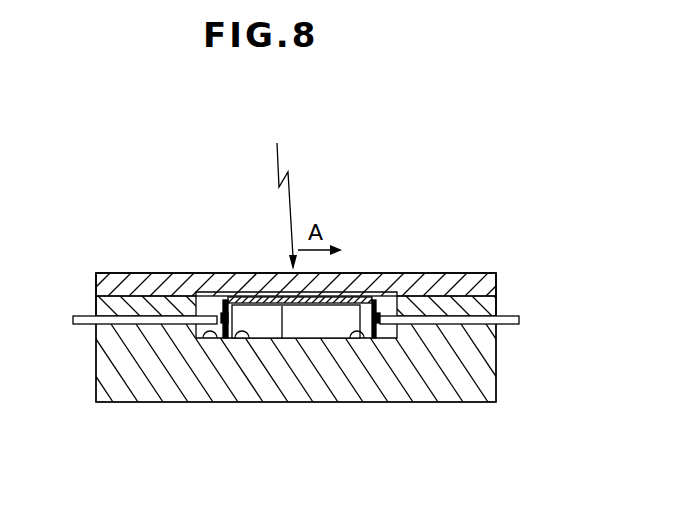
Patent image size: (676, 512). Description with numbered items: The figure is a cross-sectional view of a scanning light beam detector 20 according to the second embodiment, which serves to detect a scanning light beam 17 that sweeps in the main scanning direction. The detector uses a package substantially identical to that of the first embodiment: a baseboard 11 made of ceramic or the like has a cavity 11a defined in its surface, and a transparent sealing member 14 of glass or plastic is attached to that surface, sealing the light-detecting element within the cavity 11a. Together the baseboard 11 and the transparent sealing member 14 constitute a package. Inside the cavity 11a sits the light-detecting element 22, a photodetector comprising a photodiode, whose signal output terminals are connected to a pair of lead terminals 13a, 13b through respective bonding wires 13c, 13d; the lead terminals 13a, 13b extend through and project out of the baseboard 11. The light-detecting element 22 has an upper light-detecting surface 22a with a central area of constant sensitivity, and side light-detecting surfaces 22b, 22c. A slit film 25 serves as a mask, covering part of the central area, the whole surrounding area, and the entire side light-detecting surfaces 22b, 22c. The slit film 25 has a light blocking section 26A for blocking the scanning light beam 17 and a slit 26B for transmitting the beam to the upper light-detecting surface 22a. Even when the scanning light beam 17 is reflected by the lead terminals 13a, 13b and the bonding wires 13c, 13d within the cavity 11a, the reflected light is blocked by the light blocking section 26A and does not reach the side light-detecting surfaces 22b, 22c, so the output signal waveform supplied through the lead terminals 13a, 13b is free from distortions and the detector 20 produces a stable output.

The scanning light beam detector 20 is at (504, 275).
The baseboard 11 is at (482, 390).
The cavity 11a is at (218, 348).
The transparent sealing member 14 is at (148, 273).
The lead terminal 13a is at (82, 327).
The lead terminal 13b is at (515, 324).
The bonding wire 13c is at (205, 273).
The bonding wire 13d is at (383, 290).
The scanning light beam 17 is at (290, 210).
The light-detecting element 22 is at (333, 330).
The upper light-detecting surface 22a is at (283, 340).
The side light-detecting surface 22b is at (255, 345).
The side light-detecting surface 22c is at (365, 340).
The slit film 25 is at (348, 290).
The light blocking section 26A is at (370, 290).
The slit 26B is at (278, 272).